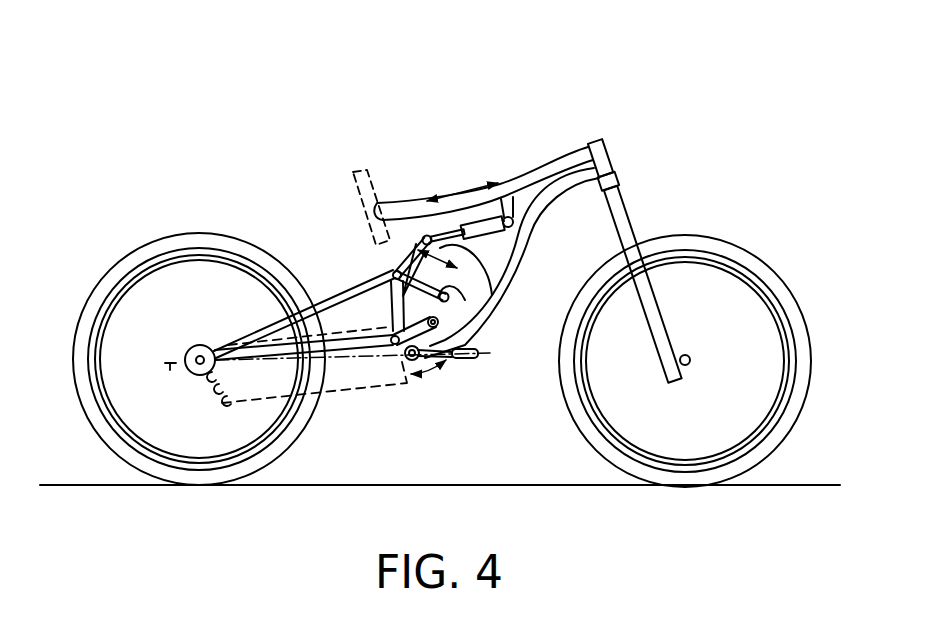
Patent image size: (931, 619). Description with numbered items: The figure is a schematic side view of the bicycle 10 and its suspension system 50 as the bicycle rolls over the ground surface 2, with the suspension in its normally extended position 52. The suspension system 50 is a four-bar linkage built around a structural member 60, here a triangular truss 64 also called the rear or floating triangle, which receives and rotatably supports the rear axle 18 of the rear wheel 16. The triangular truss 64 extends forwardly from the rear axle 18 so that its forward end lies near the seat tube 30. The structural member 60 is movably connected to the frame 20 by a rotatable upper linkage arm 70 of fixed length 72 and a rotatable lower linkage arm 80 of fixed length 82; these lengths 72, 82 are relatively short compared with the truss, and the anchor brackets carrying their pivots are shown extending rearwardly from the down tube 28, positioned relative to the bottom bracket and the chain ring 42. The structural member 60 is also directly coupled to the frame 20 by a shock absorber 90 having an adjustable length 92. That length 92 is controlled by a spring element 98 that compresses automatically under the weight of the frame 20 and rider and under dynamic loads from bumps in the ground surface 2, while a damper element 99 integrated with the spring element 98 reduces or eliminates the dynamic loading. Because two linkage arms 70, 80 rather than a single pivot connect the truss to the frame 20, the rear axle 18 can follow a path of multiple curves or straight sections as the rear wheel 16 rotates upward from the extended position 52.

The ground surface 2 is at (290, 526).
The bicycle 10 is at (248, 100).
The rear wheel 16 is at (127, 270).
The rear axle 18 is at (203, 350).
The frame 20 is at (646, 190).
The down tube 28 is at (483, 154).
The seat tube 30 is at (372, 180).
The chain ring 42 is at (390, 374).
The suspension system 50 is at (331, 410).
The extended position 52 is at (172, 371).
The structural member 60 is at (461, 254).
The triangular truss 64 is at (270, 328).
The upper linkage arm 70 is at (493, 300).
The fixed length of upper linkage arm 72 is at (490, 270).
The lower linkage arm 80 is at (483, 337).
The fixed length of lower linkage arm 82 is at (440, 377).
The shock absorber 90 is at (507, 216).
The adjustable length 92 is at (447, 195).
The spring element 98 is at (519, 234).
The damper element 99 is at (522, 230).